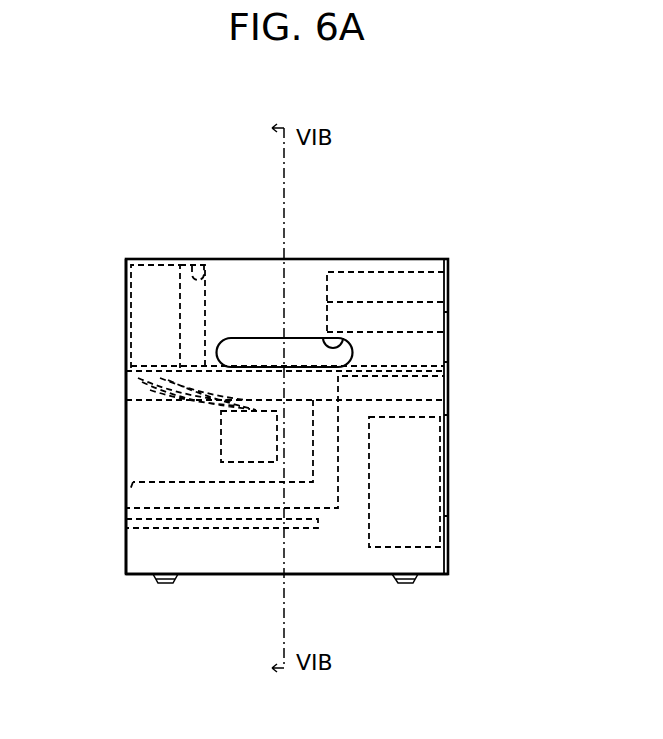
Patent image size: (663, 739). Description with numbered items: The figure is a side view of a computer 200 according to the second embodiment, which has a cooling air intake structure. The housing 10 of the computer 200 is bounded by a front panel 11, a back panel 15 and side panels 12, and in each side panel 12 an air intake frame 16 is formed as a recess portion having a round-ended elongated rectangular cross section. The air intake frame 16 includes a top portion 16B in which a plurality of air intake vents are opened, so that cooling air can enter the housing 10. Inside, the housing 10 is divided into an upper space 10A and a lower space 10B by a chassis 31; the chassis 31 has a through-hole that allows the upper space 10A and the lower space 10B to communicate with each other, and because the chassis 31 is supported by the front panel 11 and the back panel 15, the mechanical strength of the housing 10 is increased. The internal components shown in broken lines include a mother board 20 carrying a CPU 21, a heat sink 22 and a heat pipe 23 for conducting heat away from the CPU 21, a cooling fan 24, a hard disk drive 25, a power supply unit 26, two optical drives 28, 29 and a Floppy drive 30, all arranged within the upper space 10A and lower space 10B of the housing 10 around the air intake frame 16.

The computer 200 is at (477, 141).
The housing 10 is at (170, 258).
The upper space 10A is at (242, 301).
The lower space 10B is at (177, 550).
The front panel 11 is at (452, 461).
The side panel 12 is at (230, 576).
The back panel 15 is at (126, 437).
The air intake frame 16 is at (301, 356).
The top portion 16B is at (343, 340).
The mother board 20 is at (330, 512).
The CPU 21 is at (220, 438).
The heat sink 22 is at (143, 297).
The heat pipe 23 is at (125, 383).
The cooling fan 24 is at (196, 258).
The hard disk drive 25 is at (420, 547).
The power supply unit 26 is at (118, 507).
The optical drive 28 is at (425, 287).
The optical drive 29 is at (417, 318).
The Floppy drive 30 is at (417, 377).
The chassis 31 is at (403, 363).